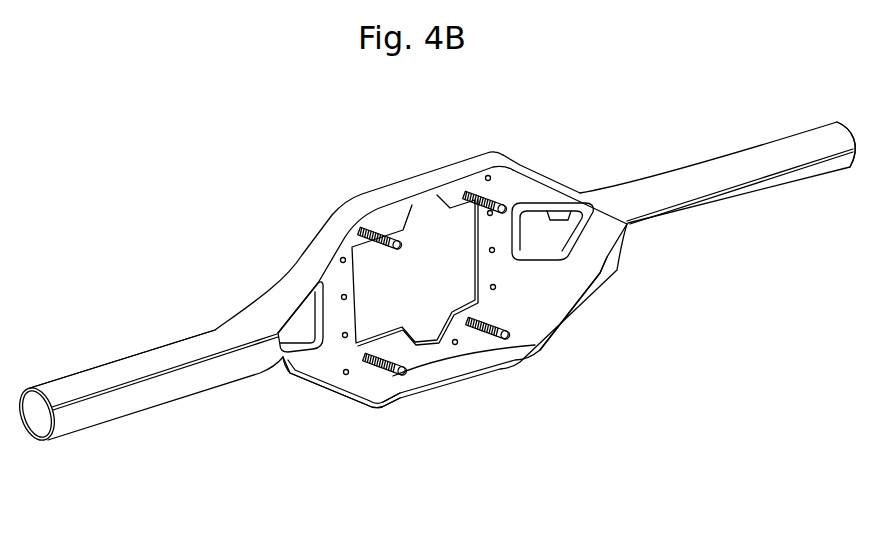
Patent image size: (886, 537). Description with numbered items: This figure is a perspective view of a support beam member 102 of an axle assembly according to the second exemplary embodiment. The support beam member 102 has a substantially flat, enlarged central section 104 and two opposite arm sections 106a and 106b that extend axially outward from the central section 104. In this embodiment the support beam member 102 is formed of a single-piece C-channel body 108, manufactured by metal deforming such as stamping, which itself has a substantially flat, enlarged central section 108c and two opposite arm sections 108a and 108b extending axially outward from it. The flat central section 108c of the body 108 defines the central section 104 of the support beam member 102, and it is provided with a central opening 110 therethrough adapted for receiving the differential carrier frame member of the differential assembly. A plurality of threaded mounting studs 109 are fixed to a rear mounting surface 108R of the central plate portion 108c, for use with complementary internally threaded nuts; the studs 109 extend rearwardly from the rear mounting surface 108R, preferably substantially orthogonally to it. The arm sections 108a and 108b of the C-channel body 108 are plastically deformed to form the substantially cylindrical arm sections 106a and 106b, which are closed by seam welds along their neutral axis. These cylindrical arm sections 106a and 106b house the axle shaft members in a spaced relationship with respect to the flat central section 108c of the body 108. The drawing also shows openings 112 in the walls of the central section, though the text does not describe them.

The support beam member 102 is at (288, 233).
The central section 104 is at (414, 166).
The arm section 106a is at (719, 156).
The arm section 106b is at (148, 403).
The C-channel body 108 is at (333, 400).
The arm section of the C-channel body 108a is at (833, 180).
The arm section of the C-channel body 108b is at (38, 423).
The central section of the C-channel body 108c is at (513, 305).
The rear mounting surface 108R is at (412, 351).
The threaded mounting studs 109 is at (373, 226).
The central opening 110 is at (478, 283).
The openings 112 is at (302, 320).